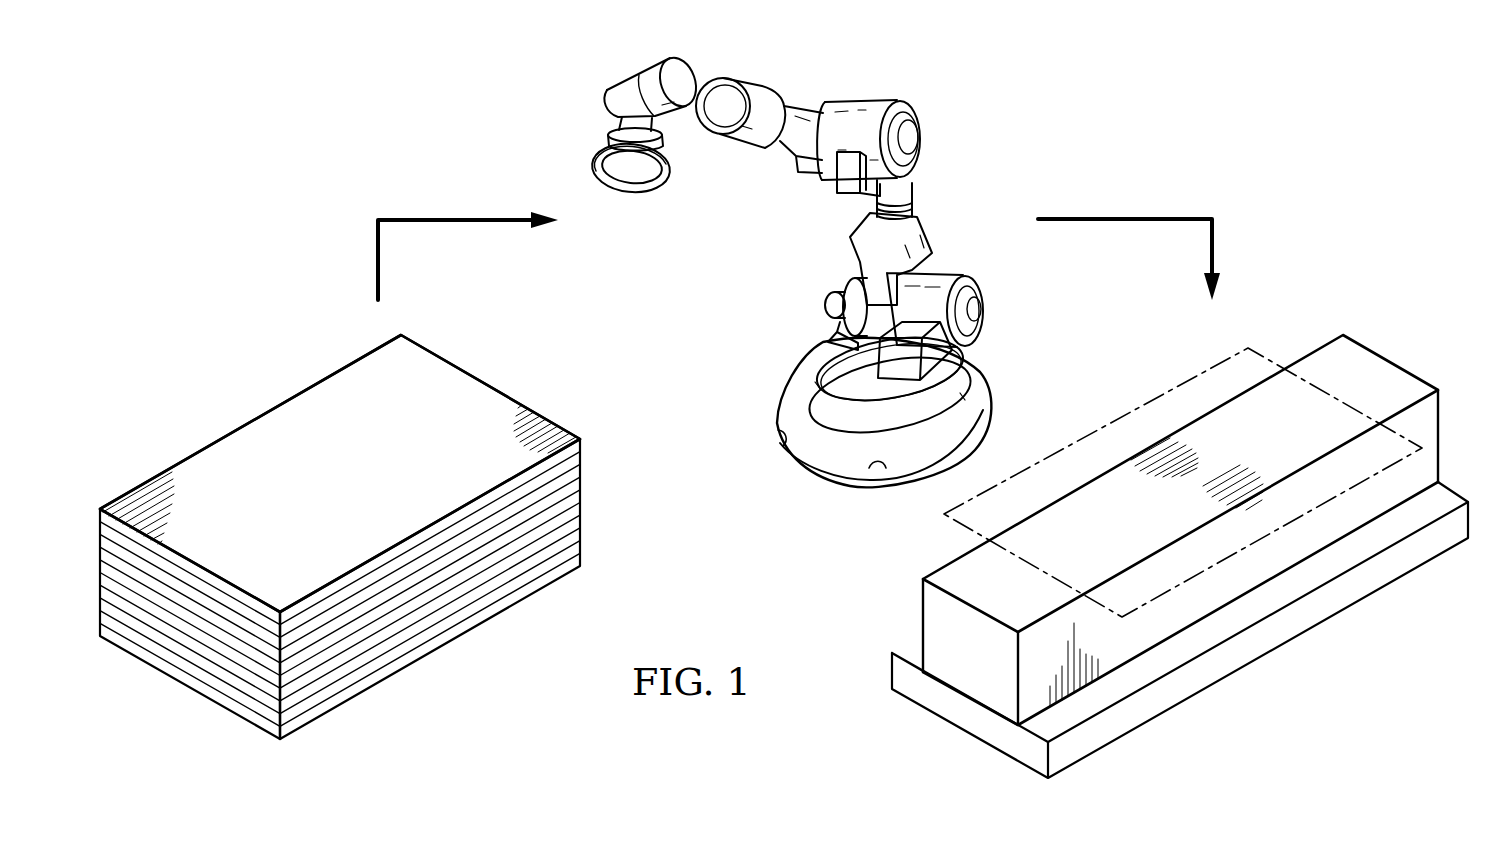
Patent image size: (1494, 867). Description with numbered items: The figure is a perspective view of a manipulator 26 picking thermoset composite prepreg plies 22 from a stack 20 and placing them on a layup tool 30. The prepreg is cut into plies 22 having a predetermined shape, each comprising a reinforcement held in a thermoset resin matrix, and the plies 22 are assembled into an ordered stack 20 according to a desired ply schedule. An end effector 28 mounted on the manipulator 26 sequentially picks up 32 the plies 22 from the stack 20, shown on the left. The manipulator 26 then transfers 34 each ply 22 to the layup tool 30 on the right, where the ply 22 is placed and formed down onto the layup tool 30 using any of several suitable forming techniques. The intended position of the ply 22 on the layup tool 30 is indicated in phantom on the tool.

The stack 20 is at (190, 354).
The plies 22 is at (262, 440).
The manipulator 26 is at (865, 100).
The end effector 28 is at (624, 190).
The layup tool 30 is at (1370, 375).
The picking up 32 is at (457, 217).
The transfer 34 is at (1130, 218).